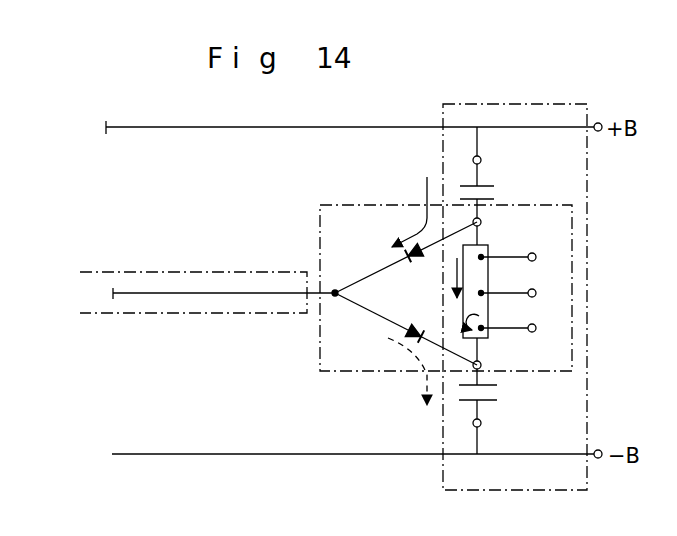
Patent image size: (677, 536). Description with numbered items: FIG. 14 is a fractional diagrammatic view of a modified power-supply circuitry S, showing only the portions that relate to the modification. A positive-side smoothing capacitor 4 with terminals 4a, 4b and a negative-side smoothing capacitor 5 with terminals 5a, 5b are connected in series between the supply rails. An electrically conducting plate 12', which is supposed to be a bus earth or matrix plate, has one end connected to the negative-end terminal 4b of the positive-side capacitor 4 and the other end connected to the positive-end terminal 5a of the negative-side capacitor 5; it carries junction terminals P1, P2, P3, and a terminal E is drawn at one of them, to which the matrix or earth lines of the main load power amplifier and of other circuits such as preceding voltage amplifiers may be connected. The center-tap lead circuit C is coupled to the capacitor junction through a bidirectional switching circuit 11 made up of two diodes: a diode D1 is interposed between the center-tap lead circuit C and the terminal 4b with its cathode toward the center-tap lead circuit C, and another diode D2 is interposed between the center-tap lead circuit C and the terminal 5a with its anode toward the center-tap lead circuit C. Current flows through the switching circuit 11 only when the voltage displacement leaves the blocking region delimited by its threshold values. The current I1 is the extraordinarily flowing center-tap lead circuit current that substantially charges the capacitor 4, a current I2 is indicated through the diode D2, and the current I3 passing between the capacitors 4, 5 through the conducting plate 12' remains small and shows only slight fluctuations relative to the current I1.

The power supply / control unit S is at (568, 104).
The positive-side smoothing capacitor 4 is at (493, 190).
The battery positive terminal 4a is at (482, 160).
The negative-end terminal of the positive-side capacitor 4b is at (482, 222).
The negative-side smoothing capacitor 5 is at (497, 392).
The positive-end terminal of the negative-side capacitor 5a is at (482, 365).
The battery negative terminal 5b is at (482, 426).
The bidirectional switching circuit 11 is at (342, 205).
The electrically conducting plate 12' is at (532, 341).
The center-tap lead circuit C is at (187, 272).
The junction terminal P1 is at (486, 254).
The junction terminal P2 is at (483, 292).
The junction terminal P3 is at (486, 322).
The terminal E is at (547, 295).
The diode D1 is at (422, 262).
The diode D2 is at (417, 320).
The current charging the capacitor 4 I1 is at (409, 212).
The current I2 is at (408, 384).
The current passing between the capacitors through the conducting plate I3 is at (451, 289).